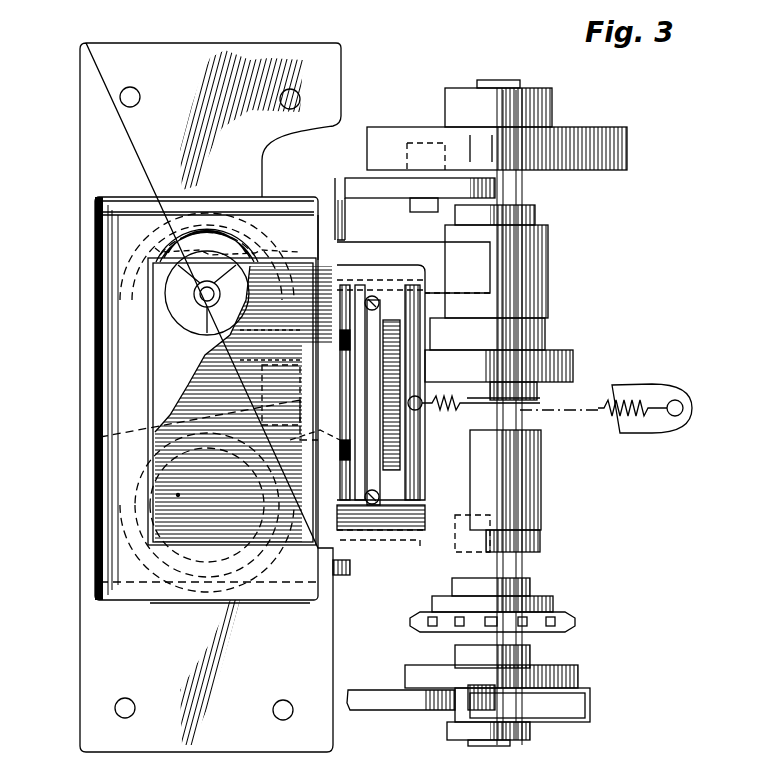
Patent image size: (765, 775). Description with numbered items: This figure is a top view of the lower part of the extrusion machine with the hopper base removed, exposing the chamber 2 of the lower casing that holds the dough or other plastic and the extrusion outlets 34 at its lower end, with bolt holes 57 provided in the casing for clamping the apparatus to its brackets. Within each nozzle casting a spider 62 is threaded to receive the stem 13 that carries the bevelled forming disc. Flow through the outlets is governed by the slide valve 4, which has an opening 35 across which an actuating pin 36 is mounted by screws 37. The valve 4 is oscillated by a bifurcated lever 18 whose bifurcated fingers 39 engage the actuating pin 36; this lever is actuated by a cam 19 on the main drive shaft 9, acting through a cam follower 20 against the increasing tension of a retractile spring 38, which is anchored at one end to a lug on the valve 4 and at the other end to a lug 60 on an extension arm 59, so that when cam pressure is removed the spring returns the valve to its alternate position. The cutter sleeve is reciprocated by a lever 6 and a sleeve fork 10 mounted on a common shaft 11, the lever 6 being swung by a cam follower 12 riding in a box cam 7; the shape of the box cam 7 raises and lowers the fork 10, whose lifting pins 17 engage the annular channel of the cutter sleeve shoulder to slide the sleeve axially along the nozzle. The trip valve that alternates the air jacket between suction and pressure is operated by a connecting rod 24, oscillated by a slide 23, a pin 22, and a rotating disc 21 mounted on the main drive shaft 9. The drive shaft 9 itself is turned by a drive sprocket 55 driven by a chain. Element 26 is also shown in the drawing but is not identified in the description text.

The chamber 2 is at (112, 355).
The valve 4 is at (178, 494).
The lever 6 is at (495, 190).
The box cam 7 is at (600, 155).
The main drive shaft 9 is at (500, 748).
The sleeve fork 10 is at (262, 398).
The common shaft 11 is at (348, 578).
The cam follower 12 is at (410, 142).
The stem 13 is at (200, 321).
The lifting pins 17 is at (182, 197).
The bifurcated lever 18 is at (340, 413).
The cam 19 is at (560, 362).
The cam follower 20 is at (400, 386).
The rotating disc 21 is at (560, 668).
The pin 22 is at (485, 692).
The slide 23 is at (590, 708).
The connecting rod 24 is at (363, 690).
The collar 26 is at (530, 731).
The extrusion outlets 34 is at (170, 302).
The opening 35 is at (400, 320).
The actuating pin 36 is at (385, 478).
The screws 37 is at (376, 298).
The retractile spring 38 is at (632, 400).
The bifurcated fingers 39 is at (385, 336).
The drive sprocket 55 is at (560, 612).
The bolt holes 57 is at (138, 92).
The extension arm 59 is at (648, 430).
The lug 60 is at (681, 411).
The spider 62 is at (150, 284).